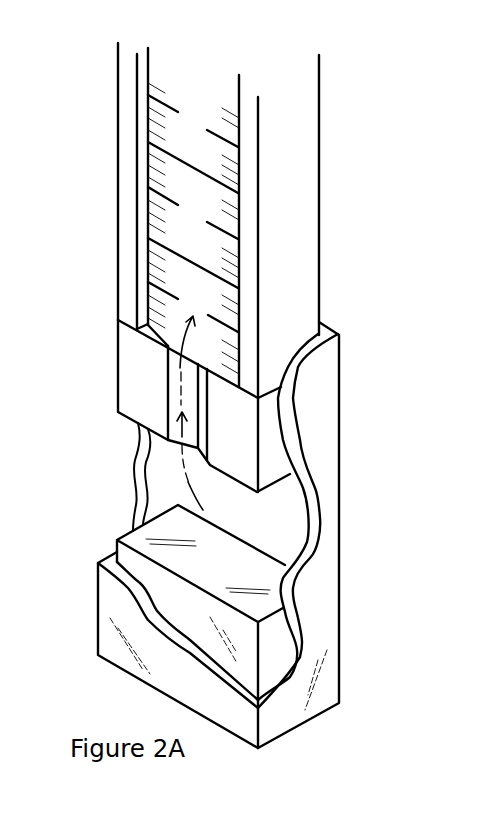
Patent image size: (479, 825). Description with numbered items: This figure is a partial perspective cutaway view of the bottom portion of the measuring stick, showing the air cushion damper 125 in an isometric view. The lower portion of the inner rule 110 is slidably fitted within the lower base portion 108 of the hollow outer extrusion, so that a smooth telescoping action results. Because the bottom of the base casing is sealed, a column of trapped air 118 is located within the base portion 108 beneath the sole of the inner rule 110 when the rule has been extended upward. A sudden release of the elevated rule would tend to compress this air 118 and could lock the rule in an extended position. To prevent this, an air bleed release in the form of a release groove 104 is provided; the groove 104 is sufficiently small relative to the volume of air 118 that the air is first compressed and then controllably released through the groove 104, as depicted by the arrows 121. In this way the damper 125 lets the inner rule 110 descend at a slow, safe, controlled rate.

The air bleed release groove 104 is at (175, 402).
The lower base portion 108 is at (318, 623).
The inner rule 110 is at (233, 232).
The column of trapped air 118 is at (268, 533).
The arrows 121 is at (200, 317).
The air cushion damper 125 is at (111, 493).